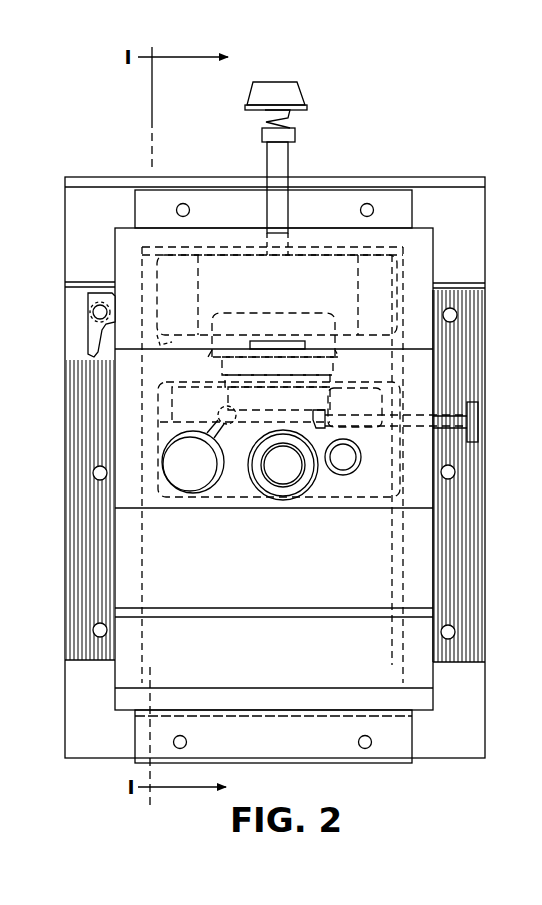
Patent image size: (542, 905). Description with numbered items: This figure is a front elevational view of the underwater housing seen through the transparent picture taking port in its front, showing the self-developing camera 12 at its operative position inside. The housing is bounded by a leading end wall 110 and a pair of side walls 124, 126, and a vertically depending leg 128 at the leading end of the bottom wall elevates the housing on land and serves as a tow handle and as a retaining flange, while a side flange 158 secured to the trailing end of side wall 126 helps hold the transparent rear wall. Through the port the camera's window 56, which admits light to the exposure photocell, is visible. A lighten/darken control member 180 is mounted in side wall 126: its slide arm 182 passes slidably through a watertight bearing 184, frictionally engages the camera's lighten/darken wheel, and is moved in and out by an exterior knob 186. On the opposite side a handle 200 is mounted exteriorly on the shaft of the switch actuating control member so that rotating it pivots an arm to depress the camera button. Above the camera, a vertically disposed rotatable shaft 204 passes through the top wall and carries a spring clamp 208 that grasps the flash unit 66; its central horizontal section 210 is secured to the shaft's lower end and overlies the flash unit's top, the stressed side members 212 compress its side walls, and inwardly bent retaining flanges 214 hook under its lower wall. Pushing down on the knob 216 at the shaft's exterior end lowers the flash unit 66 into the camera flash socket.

The self-developing camera 12 is at (215, 368).
The window 56 is at (68, 400).
The flash unit 66 is at (238, 263).
The leading end wall 110 is at (383, 670).
The side wall 124 is at (100, 458).
The side wall 126 is at (433, 458).
The leg 128 is at (402, 738).
The side flange 158 is at (463, 507).
The lighten/darken control member 180 is at (392, 445).
The slide arm 182 is at (382, 412).
The watertight bearing 184 is at (433, 415).
The knob 186 is at (492, 403).
The handle 200 is at (90, 330).
The shaft 204 is at (286, 152).
The spring clamp 208 is at (347, 260).
The central horizontal section 210 is at (307, 255).
The side members 212 is at (142, 275).
The retaining flanges 214 is at (383, 337).
The knob 216 is at (280, 92).